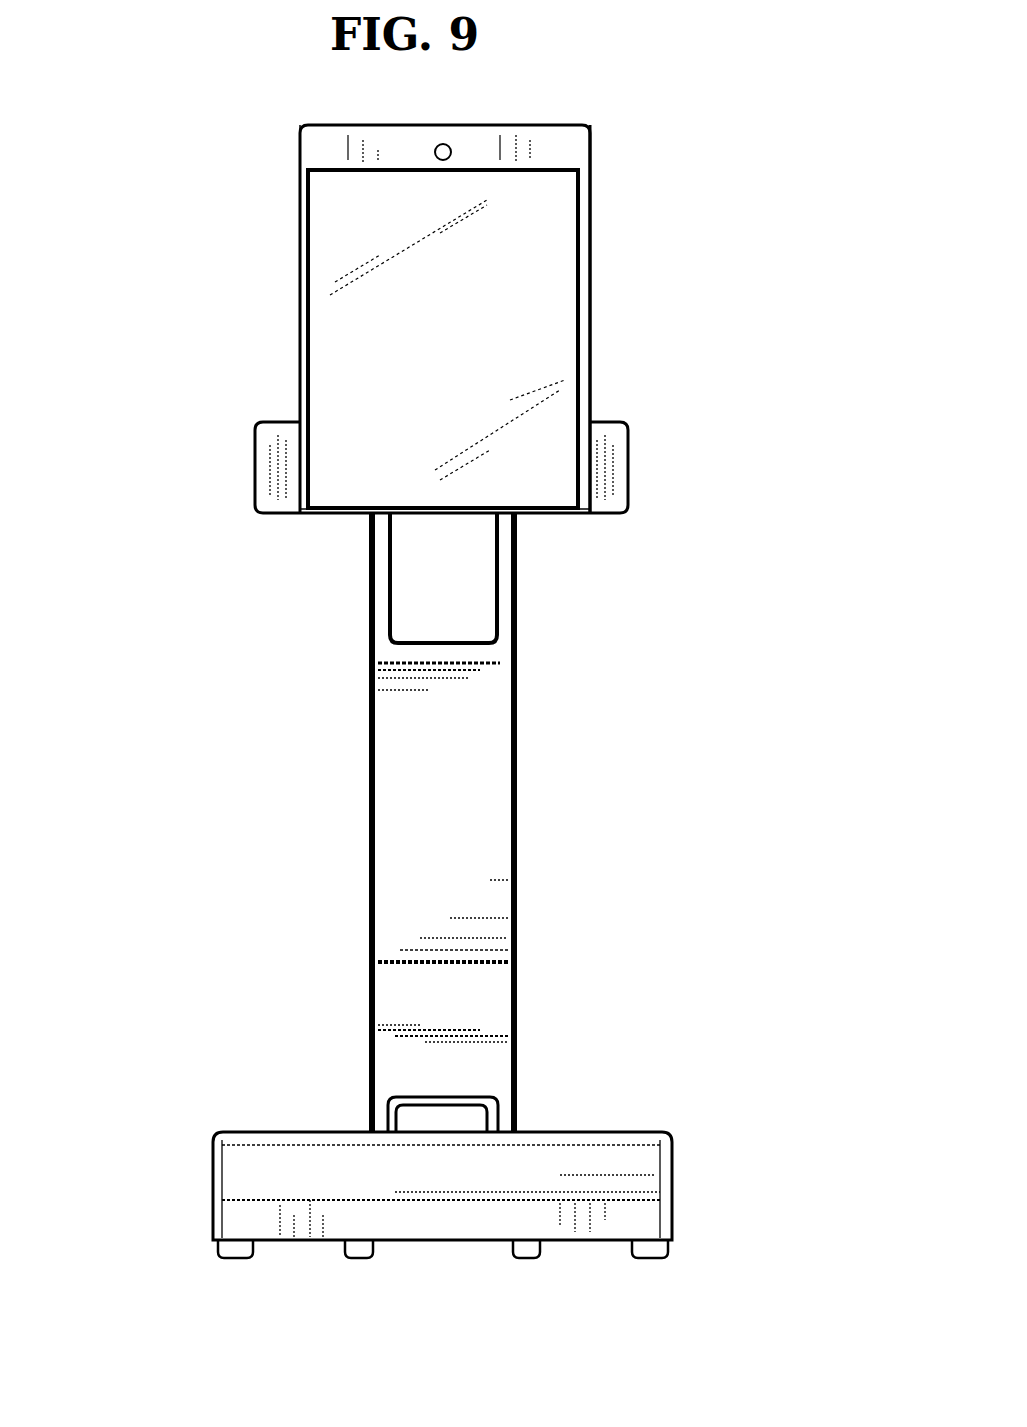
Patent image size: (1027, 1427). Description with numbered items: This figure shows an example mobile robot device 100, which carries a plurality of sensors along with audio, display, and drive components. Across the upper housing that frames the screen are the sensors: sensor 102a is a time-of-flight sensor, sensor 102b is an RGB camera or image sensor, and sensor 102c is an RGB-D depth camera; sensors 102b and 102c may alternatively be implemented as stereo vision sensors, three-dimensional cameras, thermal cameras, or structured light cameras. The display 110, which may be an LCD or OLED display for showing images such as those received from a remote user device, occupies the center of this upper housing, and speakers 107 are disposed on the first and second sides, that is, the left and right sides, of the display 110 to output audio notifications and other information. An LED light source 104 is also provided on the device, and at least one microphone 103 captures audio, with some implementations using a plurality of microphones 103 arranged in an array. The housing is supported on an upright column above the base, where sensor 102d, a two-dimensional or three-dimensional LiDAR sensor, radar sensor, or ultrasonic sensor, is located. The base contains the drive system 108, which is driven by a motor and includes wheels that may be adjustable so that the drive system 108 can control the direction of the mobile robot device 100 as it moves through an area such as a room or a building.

The mobile robot device 100 is at (791, 55).
The time-of-flight sensor 102a is at (296, 155).
The RGB camera 102b is at (443, 152).
The RGB-D camera 102c is at (562, 153).
The LiDAR sensor 102d is at (442, 1130).
The microphone 103 is at (427, 515).
The LED light source 104 is at (335, 498).
The speaker 107 is at (277, 497).
The drive system 108 is at (668, 1250).
The display 110 is at (547, 320).